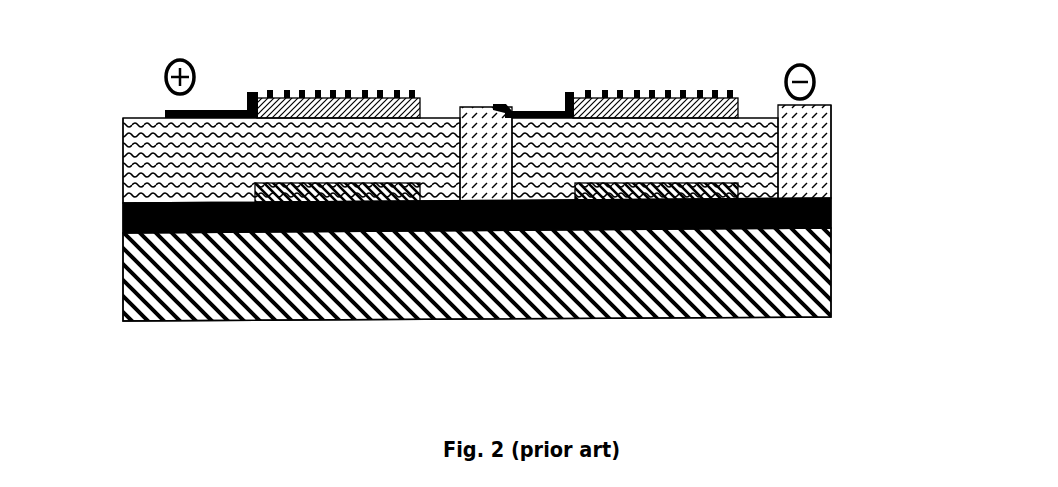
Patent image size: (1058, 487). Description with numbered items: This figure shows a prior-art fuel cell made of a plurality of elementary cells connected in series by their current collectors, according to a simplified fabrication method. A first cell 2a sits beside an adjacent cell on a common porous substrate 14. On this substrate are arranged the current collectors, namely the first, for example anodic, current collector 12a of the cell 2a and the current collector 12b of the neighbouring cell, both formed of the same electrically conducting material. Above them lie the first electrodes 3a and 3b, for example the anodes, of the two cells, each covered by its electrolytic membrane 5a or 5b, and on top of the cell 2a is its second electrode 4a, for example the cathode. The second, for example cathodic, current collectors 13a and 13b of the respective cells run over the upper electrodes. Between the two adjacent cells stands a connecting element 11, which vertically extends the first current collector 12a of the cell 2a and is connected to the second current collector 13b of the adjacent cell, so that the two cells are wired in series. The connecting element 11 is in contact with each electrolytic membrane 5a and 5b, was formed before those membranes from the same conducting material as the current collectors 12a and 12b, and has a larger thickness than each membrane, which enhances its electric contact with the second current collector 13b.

The cell 2a is at (106, 100).
The first electrode 3a is at (297, 187).
The first electrode 3b is at (633, 185).
The second electrode 4a is at (331, 112).
The electrolytic membrane 5a is at (382, 147).
The electrolytic membrane 5b is at (612, 140).
The connecting element 11 is at (487, 147).
The first current collector 12a is at (378, 226).
The current collector 12b is at (676, 215).
The second current collector 13a is at (210, 110).
The second current collector 13b is at (736, 95).
The porous substrate 14 is at (352, 288).